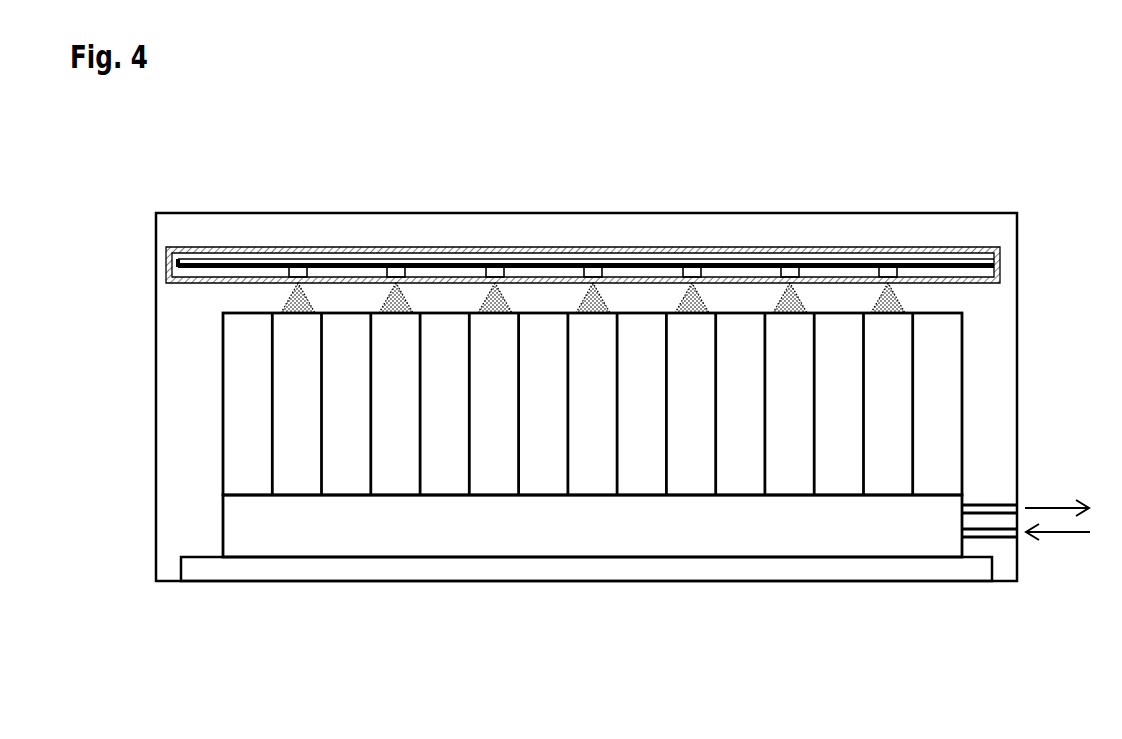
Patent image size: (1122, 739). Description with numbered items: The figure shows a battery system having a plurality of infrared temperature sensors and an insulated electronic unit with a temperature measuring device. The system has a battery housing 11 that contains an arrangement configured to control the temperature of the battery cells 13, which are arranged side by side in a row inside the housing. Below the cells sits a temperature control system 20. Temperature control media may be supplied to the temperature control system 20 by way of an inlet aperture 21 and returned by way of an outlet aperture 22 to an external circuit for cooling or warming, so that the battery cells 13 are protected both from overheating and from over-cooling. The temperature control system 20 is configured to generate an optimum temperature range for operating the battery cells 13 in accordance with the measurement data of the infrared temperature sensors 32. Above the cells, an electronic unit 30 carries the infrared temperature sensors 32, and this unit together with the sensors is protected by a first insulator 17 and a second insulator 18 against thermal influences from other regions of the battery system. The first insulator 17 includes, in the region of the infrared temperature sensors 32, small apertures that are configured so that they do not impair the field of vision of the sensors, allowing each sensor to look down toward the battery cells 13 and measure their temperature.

The battery housing 11 is at (533, 208).
The battery cells 13 is at (393, 465).
The first insulator 17 is at (715, 271).
The second insulator 18 is at (847, 243).
The temperature control system 20 is at (796, 535).
The inlet aperture 21 is at (990, 542).
The outlet aperture 22 is at (987, 495).
The electronic unit 30 is at (234, 258).
The infrared temperature sensors 32 is at (395, 270).